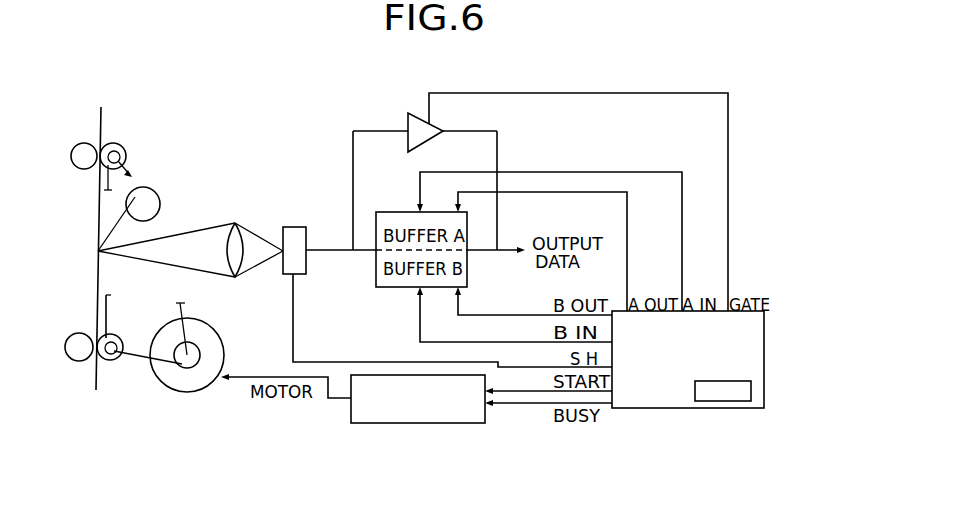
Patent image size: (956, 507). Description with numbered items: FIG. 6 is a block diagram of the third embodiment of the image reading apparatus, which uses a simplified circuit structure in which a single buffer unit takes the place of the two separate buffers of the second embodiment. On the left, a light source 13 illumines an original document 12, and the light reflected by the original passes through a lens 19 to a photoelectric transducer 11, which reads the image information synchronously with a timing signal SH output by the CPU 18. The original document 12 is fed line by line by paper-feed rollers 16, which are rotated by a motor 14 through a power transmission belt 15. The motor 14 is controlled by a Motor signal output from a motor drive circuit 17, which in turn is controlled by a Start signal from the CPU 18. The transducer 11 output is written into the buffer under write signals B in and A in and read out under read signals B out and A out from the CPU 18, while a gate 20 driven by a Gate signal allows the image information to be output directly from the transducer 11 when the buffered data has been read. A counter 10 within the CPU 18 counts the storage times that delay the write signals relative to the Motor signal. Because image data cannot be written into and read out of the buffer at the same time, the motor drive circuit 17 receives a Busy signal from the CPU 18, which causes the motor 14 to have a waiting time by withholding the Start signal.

The counter 10 is at (720, 401).
The photoelectric transducer 11 is at (289, 235).
The original document 12 is at (98, 377).
The light source 13 is at (155, 196).
The motor 14 is at (207, 380).
The power transmission belt 15 is at (140, 357).
The paper-feed rollers 16 is at (128, 150).
The motor drive circuit 17 is at (478, 424).
The CPU 18 is at (640, 404).
The lens 19 is at (232, 238).
The gate 20 is at (408, 116).